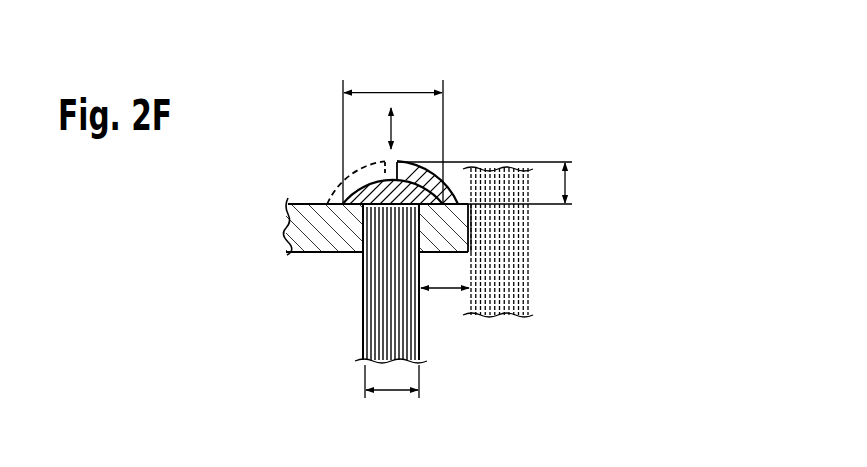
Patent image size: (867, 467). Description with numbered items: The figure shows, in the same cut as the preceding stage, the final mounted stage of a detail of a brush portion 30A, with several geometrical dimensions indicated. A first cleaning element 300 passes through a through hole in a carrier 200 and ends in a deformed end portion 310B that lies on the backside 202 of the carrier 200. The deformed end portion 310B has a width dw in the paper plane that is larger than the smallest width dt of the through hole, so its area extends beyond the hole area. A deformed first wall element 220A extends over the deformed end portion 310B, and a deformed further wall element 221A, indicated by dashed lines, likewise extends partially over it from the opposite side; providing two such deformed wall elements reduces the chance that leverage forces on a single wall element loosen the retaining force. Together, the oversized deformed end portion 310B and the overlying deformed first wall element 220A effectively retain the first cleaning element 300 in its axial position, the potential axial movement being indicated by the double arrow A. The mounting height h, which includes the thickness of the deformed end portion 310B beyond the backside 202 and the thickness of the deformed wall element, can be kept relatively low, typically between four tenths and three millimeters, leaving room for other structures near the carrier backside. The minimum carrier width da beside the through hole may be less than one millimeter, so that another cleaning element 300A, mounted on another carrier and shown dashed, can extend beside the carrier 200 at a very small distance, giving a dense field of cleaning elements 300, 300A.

The carrier 200 is at (308, 243).
The backside of the carrier 202 is at (308, 204).
The first cleaning element 300 is at (348, 317).
The deformed end portion of the first cleaning element 310B is at (366, 193).
The deformed further wall element 221A is at (360, 170).
The deformed first wall element 220A is at (425, 168).
The brush portion 30A is at (531, 230).
The another cleaning element 300A is at (537, 293).
The mounting height h is at (567, 183).
The double arrow indicating potential axial movement A is at (393, 128).
The width of the deformed end portion dw is at (388, 92).
The minimum width of the carrier on one side of the first through hole da is at (447, 291).
The smallest width of the first through hole dt is at (393, 393).